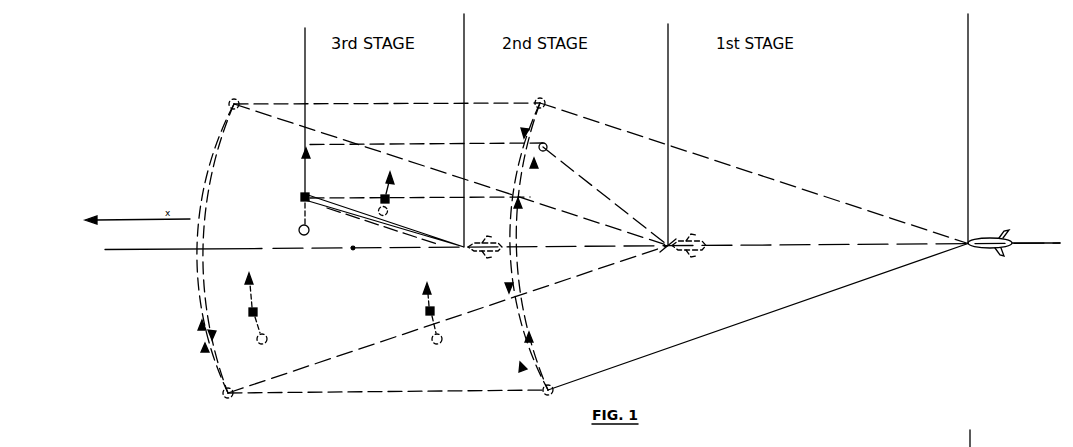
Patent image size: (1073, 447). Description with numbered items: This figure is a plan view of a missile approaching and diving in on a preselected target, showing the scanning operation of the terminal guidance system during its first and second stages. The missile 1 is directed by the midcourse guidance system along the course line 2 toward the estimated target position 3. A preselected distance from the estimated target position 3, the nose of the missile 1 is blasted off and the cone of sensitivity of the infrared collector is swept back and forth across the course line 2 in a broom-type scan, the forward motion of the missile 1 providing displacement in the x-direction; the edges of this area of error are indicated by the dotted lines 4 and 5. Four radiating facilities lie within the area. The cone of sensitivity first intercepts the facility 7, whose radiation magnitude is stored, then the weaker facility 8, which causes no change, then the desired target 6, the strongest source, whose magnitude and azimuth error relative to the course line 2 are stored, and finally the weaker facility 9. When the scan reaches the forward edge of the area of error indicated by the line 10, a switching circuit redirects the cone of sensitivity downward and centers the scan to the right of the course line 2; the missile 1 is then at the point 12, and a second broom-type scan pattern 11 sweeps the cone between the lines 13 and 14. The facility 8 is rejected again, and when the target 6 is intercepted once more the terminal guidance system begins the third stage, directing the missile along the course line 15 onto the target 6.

The missile 1 is at (981, 235).
The course line 2 is at (823, 245).
The estimated target position 3 is at (351, 249).
The dotted line 4 is at (371, 102).
The dotted line 5 is at (365, 394).
The desired target 6 is at (309, 192).
The radiating facility 7 is at (438, 308).
The radiating facility 8 is at (392, 202).
The radiating facility 9 is at (259, 310).
The forward edge line 10 is at (206, 300).
The scan pattern 11 is at (549, 146).
The missile position point 12 is at (666, 250).
The scan boundary line 13 is at (416, 144).
The scan boundary line 14 is at (428, 247).
The course line 15 is at (352, 226).